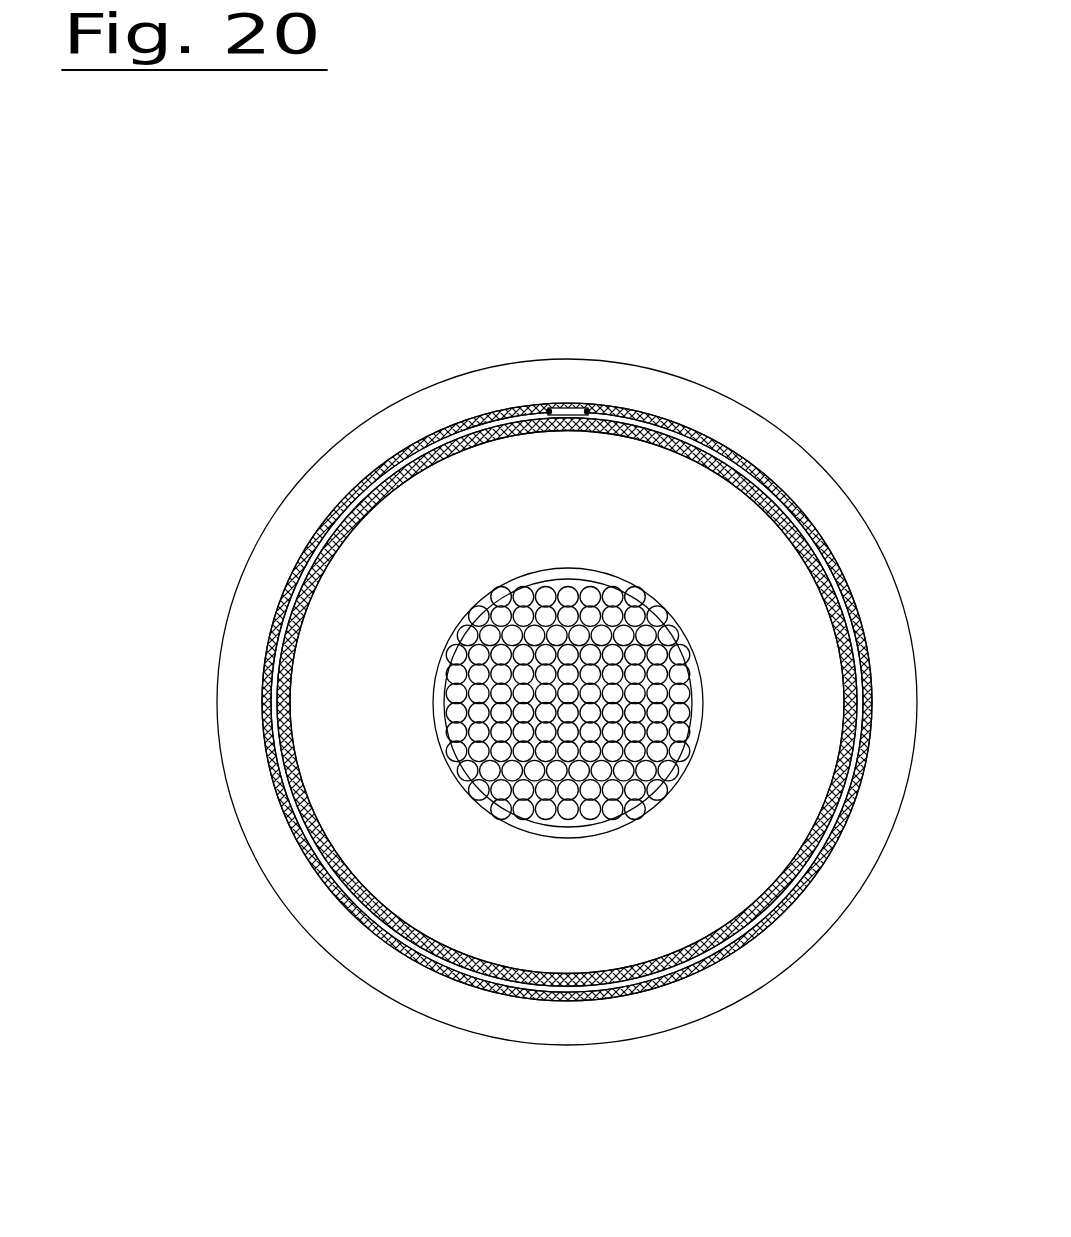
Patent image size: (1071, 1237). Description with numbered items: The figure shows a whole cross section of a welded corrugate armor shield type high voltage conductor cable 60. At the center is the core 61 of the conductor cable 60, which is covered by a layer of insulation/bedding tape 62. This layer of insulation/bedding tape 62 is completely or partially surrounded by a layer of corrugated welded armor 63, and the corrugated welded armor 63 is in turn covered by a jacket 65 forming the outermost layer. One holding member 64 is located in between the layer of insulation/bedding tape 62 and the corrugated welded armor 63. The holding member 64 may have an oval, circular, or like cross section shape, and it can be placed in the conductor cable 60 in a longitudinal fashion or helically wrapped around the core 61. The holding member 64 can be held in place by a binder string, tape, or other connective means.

The conductor cable 60 is at (518, 205).
The core 61 is at (305, 684).
The layer of insulation/bedding tape 62 is at (346, 492).
The corrugated welded armor 63 is at (481, 397).
The holding member 64 is at (576, 388).
The jacket 65 is at (799, 446).